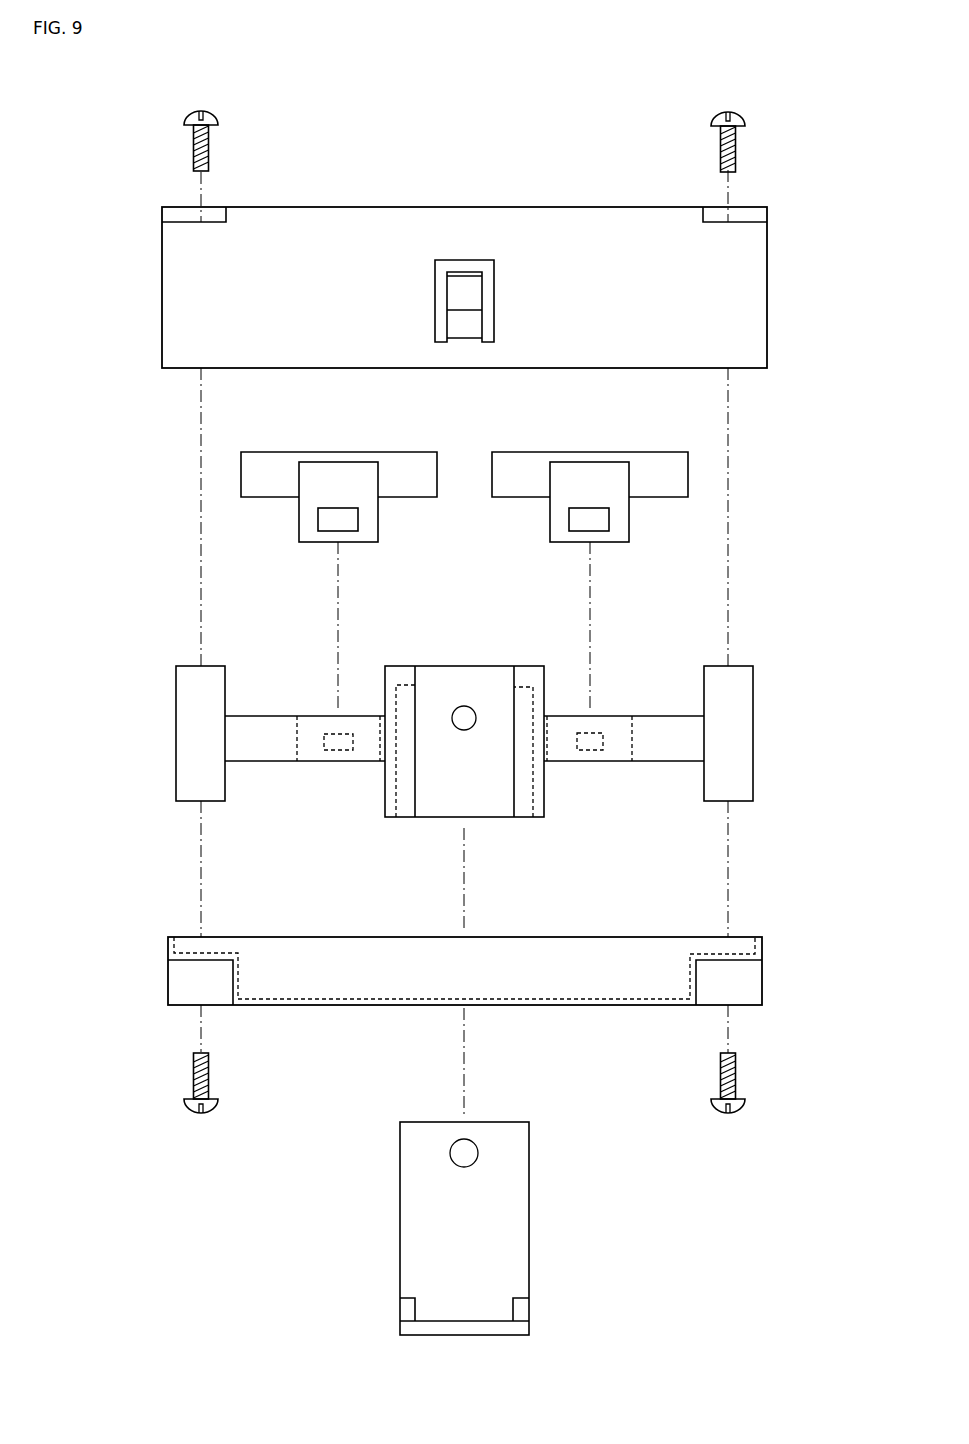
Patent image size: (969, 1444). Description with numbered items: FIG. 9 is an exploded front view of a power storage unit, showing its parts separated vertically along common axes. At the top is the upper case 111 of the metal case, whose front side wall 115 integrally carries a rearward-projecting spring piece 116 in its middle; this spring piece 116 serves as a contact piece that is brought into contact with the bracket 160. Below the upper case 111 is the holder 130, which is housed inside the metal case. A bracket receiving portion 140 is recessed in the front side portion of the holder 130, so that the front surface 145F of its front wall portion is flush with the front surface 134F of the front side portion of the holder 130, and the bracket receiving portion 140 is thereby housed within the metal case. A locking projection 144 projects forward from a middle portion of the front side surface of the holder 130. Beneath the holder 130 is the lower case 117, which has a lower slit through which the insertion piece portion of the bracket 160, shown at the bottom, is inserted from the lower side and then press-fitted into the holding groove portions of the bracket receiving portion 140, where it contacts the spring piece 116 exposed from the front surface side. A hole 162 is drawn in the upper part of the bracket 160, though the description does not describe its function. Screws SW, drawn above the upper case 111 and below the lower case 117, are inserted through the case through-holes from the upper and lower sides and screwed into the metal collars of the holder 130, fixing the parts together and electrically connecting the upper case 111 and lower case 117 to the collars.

The screw SW is at (739, 113).
The upper case 111 is at (513, 253).
The front side wall 115 is at (733, 312).
The spring piece 116 is at (465, 295).
The holder 130 is at (516, 763).
The front surface of the front side portion 134F is at (617, 743).
The bracket receiving portion 140 is at (496, 766).
The locking projection 144 is at (464, 708).
The front surface of the front wall portion 145F is at (524, 788).
The lower case 117 is at (766, 909).
The bracket 160 is at (534, 1199).
The hole 162 is at (466, 1150).